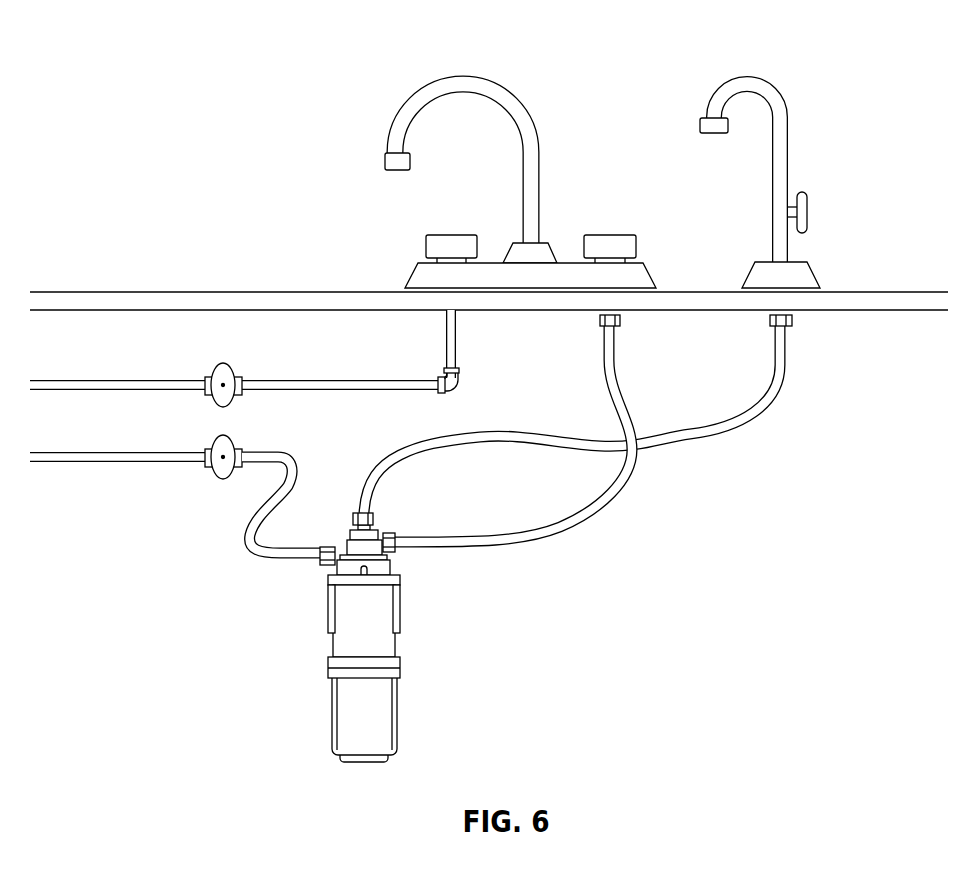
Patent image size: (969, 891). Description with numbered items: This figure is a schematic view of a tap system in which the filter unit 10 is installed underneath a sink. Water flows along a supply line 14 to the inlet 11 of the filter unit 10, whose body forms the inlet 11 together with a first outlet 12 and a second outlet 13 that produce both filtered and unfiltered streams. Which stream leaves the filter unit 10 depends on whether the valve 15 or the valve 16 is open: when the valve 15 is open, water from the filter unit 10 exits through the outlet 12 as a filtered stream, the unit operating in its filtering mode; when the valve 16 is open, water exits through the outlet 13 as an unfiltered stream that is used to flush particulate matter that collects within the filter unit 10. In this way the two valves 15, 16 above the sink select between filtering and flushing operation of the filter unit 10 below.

The filter unit 10 is at (392, 705).
The inlet 11 is at (318, 565).
The first outlet 12 is at (353, 520).
The second outlet 13 is at (390, 530).
The supply line 14 is at (123, 462).
The valve 15 is at (805, 205).
The valve 16 is at (620, 235).